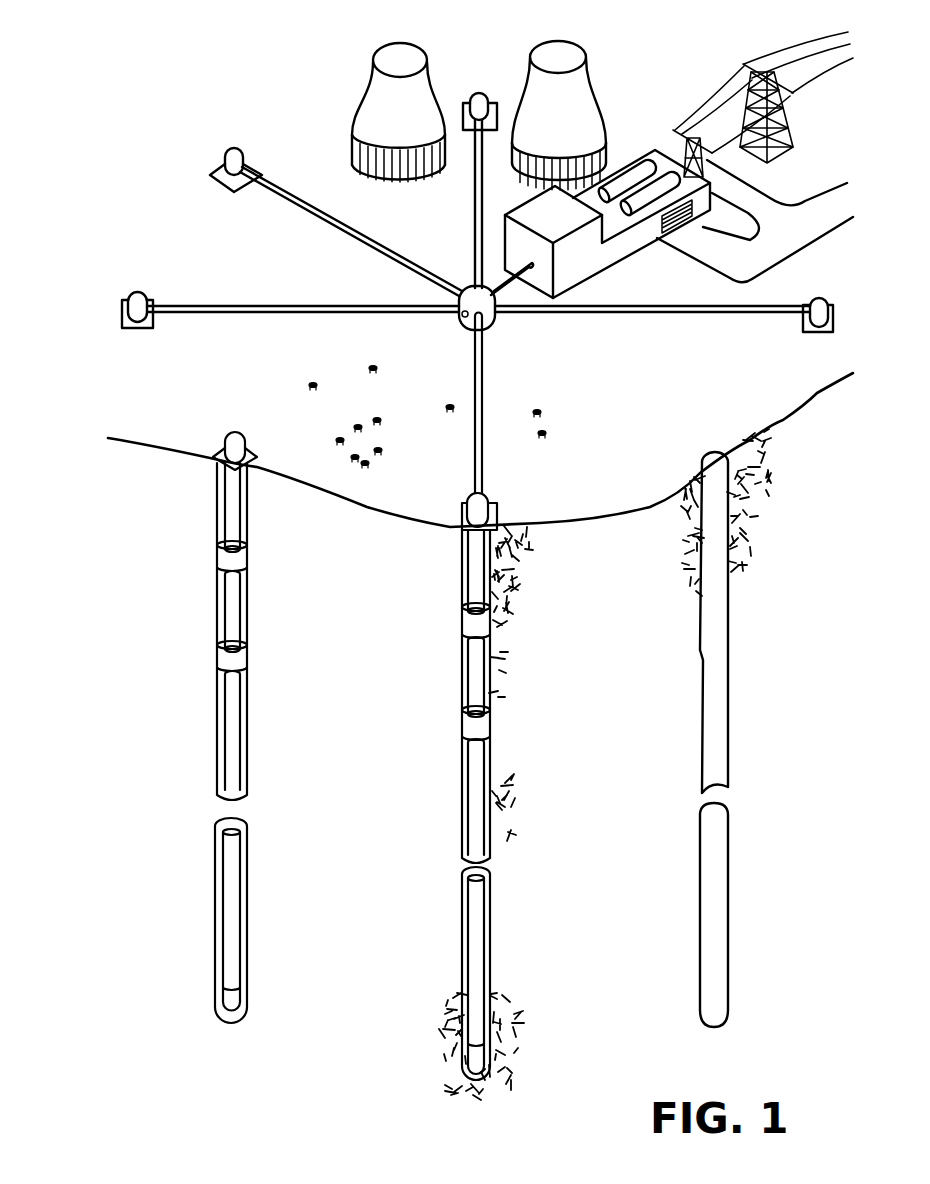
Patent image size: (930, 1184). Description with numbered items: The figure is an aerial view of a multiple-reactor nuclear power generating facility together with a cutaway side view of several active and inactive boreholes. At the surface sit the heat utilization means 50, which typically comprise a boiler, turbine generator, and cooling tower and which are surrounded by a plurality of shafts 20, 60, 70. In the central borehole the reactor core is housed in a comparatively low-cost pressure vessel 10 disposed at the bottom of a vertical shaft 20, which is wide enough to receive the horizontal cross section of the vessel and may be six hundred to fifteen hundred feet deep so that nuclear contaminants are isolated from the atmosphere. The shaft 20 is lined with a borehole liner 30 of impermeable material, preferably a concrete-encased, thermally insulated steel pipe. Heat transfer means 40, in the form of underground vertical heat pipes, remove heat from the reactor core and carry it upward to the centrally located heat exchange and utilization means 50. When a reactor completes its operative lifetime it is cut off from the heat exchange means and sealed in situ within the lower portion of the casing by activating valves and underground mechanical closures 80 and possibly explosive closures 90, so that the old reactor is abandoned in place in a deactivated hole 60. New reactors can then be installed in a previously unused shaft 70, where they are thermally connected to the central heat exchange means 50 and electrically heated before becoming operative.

The pressure vessel 10 is at (477, 1060).
The vertical shaft 20 is at (445, 533).
The borehole liner 30 is at (478, 941).
The heat transfer means 40 is at (480, 460).
The heat utilization means 50 is at (354, 23).
The deactivated hole 60 is at (207, 468).
The unused shaft 70 is at (755, 455).
The underground mechanical closures 80 is at (477, 627).
The explosive closures 90 is at (481, 728).